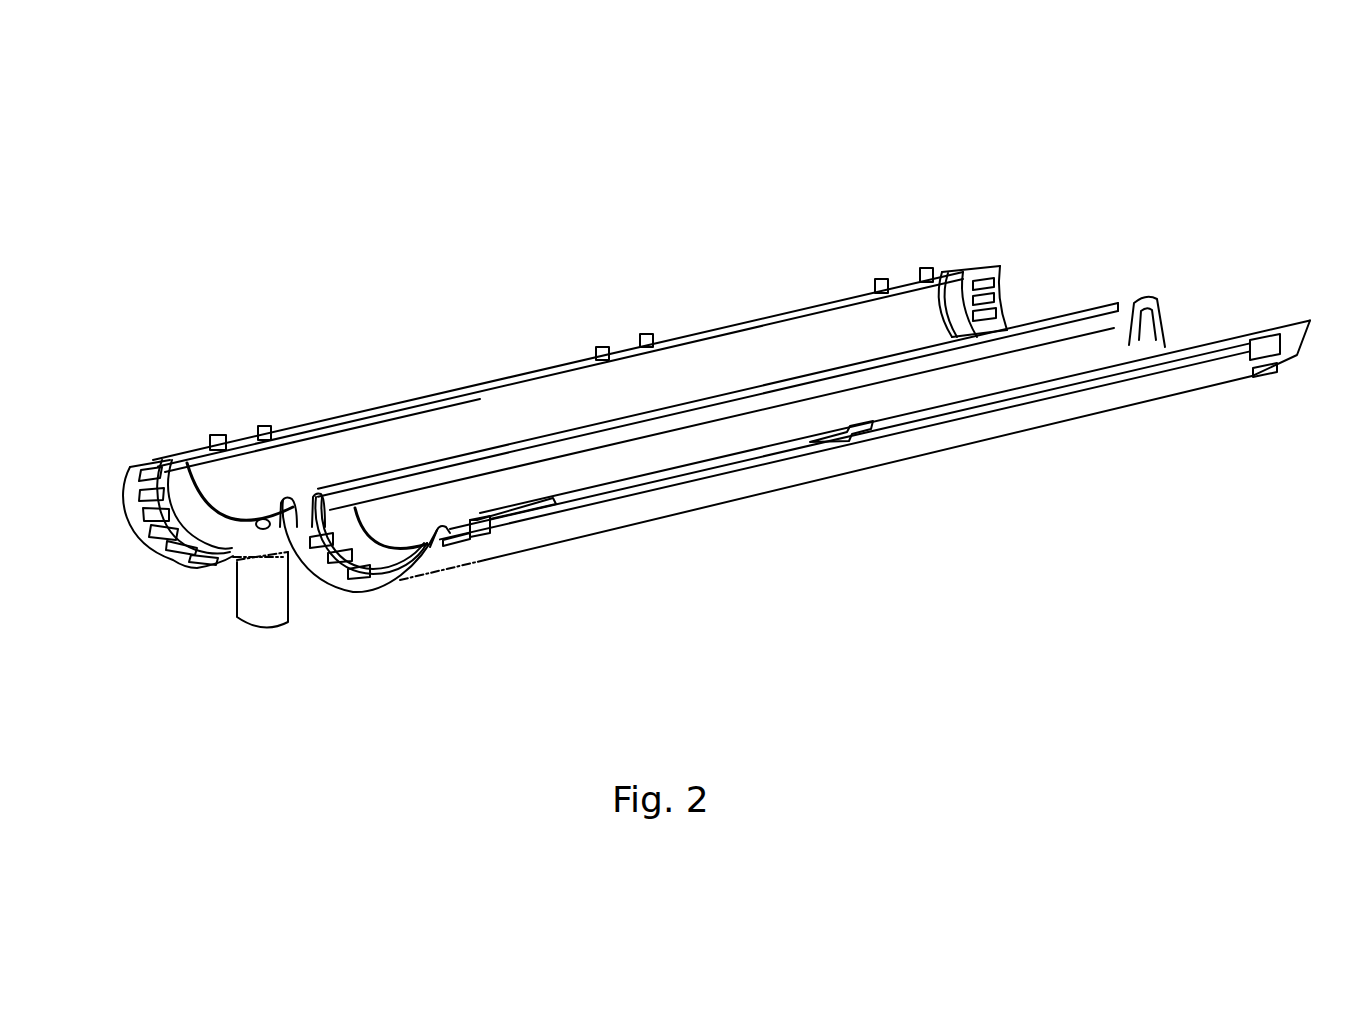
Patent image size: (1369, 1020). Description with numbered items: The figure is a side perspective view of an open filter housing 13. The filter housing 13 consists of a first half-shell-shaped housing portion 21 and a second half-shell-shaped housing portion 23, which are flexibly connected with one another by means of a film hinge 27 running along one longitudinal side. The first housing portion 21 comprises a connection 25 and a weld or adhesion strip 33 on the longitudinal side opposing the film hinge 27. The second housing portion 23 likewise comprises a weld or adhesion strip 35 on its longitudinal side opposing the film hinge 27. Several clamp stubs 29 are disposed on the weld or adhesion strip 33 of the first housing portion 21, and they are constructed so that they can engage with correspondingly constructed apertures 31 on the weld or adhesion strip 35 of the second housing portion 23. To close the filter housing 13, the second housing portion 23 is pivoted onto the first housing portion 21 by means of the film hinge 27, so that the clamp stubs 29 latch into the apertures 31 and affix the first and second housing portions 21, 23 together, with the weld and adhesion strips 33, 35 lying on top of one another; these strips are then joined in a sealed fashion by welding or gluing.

The filter housing 13 is at (136, 110).
The first half-shell-shaped housing portion 21 is at (807, 332).
The second half-shell-shaped housing portion 23 is at (1170, 385).
The connection 25 is at (243, 606).
The film hinge 27 is at (1070, 313).
The clamp stubs 29 is at (218, 436).
The apertures 31 is at (1237, 337).
The weld or adhesion strip 33 is at (442, 392).
The weld or adhesion strip 35 is at (950, 403).